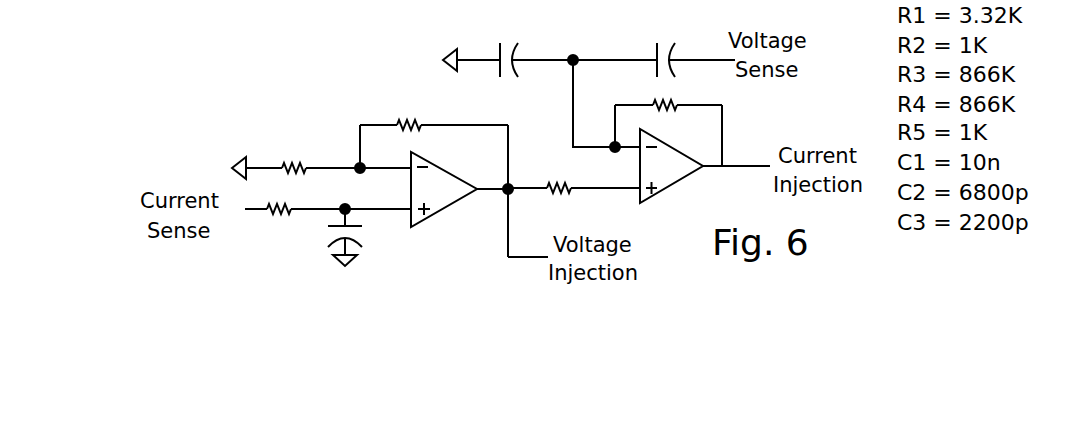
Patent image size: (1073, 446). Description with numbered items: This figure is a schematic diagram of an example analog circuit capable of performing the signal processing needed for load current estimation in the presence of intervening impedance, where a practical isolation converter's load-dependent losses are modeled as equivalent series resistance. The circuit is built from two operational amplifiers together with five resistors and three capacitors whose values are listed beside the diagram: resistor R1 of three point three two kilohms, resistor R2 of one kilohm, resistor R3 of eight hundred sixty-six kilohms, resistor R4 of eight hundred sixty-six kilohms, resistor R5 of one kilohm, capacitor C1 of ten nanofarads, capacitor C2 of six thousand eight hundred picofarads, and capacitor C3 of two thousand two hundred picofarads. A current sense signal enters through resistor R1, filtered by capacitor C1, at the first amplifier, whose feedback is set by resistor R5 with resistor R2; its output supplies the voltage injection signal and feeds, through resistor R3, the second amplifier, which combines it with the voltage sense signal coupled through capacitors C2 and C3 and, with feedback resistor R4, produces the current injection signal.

The resistor R1 is at (328, 223).
The resistor R2 is at (328, 154).
The resistor R3 is at (574, 202).
The resistor R4 is at (668, 119).
The resistor R5 is at (434, 113).
The capacitor C1 is at (361, 237).
The capacitor C2 is at (503, 46).
The capacitor C3 is at (659, 46).